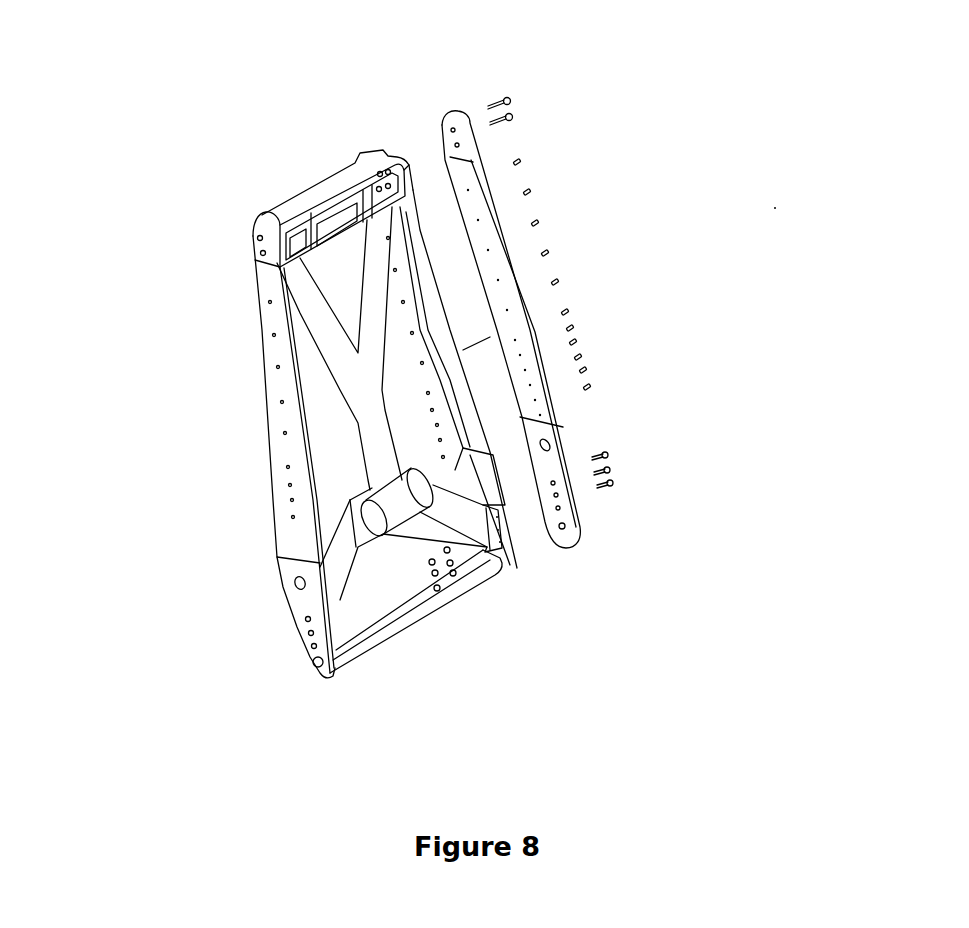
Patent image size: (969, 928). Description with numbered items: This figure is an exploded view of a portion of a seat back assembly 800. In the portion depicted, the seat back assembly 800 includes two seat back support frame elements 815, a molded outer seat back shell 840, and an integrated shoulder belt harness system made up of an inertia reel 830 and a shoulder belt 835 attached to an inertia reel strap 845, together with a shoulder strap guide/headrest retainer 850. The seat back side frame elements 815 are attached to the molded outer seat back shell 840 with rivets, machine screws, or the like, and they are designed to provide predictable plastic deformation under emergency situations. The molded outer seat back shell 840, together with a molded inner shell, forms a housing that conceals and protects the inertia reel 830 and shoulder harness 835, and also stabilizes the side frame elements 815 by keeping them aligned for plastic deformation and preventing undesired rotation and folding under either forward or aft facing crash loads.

The seat back assembly 800 is at (626, 29).
The seat back support frame element 815 is at (290, 620).
The inertia reel 830 is at (393, 508).
The shoulder belt 835 is at (360, 383).
The molded outer seat back shell 840 is at (402, 642).
The inertia reel strap 845 is at (352, 538).
The shoulder strap guide/headrest retainer 850 is at (315, 167).